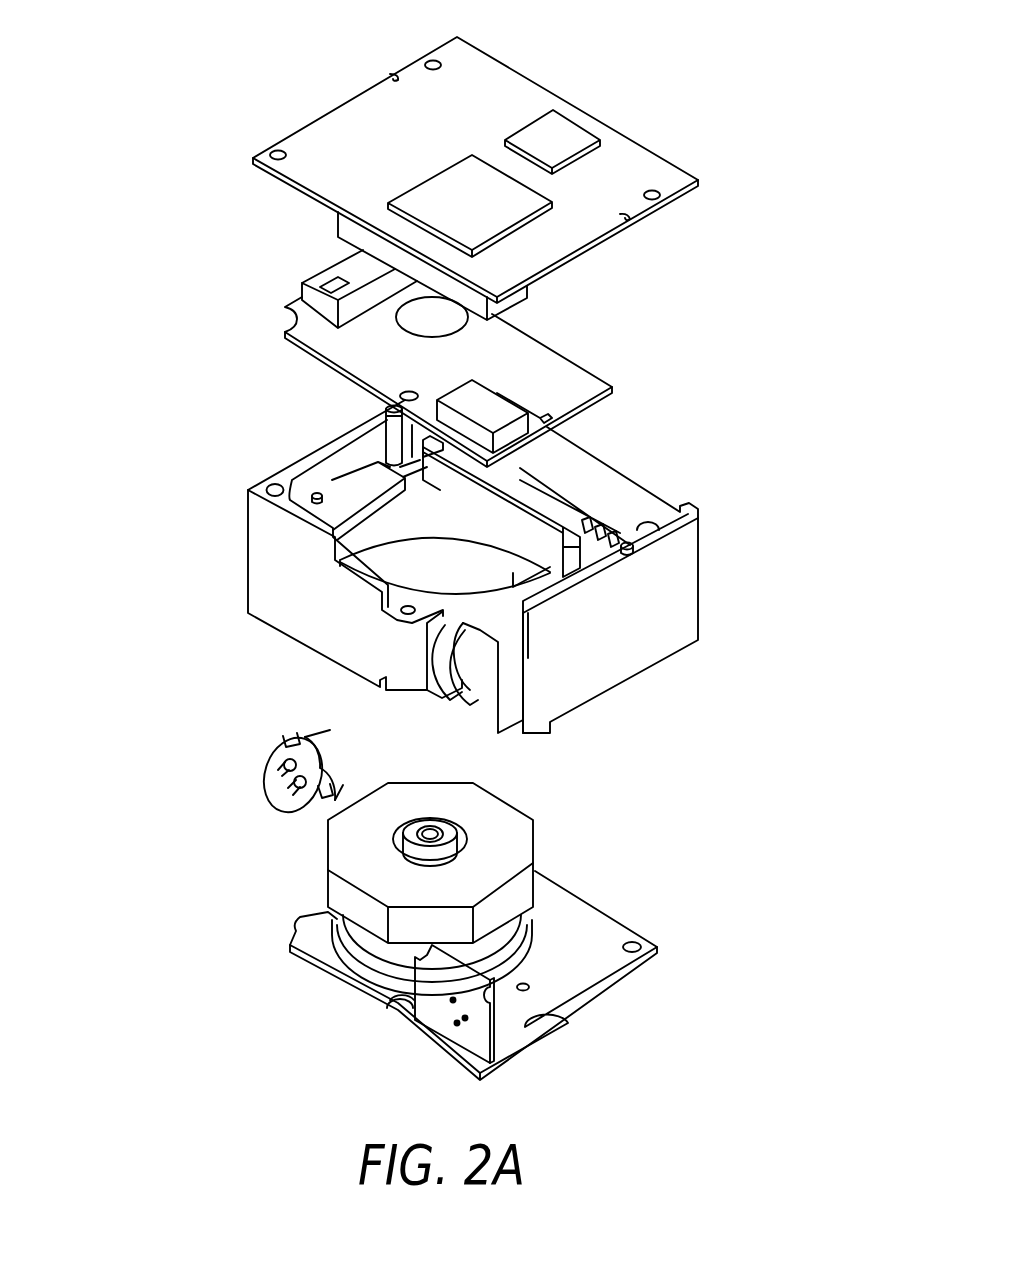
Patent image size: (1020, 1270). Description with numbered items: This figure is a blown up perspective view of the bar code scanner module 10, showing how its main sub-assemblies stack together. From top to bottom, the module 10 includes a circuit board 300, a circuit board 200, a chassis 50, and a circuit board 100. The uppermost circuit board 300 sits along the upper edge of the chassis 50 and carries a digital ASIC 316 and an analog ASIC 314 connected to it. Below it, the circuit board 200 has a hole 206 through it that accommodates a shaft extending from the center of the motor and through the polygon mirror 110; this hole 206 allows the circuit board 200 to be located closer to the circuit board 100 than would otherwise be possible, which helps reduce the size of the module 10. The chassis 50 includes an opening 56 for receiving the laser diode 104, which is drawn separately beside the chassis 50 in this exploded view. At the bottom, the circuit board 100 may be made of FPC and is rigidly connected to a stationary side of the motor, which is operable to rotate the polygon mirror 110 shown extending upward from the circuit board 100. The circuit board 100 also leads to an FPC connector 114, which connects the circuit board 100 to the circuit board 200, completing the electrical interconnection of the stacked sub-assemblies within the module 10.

The bar code scanner module 10 is at (145, 115).
The third circuit board 300 is at (418, 154).
The analog ASIC 314 is at (557, 132).
The digital ASIC 316 is at (557, 203).
The second circuit board 200 is at (373, 350).
The hole 206 is at (417, 323).
The chassis 50 is at (348, 606).
The opening 56 is at (477, 687).
The laser diode 104 is at (285, 733).
The polygon mirror 110 is at (377, 852).
The first circuit board 100 is at (313, 946).
The FPC connector 114 is at (433, 1015).